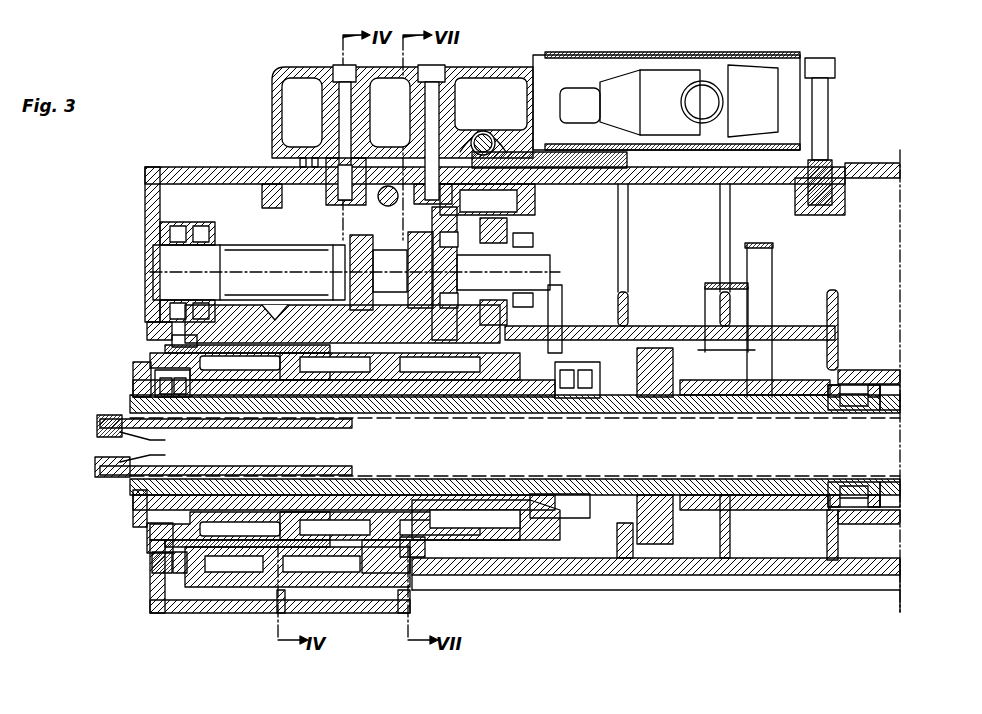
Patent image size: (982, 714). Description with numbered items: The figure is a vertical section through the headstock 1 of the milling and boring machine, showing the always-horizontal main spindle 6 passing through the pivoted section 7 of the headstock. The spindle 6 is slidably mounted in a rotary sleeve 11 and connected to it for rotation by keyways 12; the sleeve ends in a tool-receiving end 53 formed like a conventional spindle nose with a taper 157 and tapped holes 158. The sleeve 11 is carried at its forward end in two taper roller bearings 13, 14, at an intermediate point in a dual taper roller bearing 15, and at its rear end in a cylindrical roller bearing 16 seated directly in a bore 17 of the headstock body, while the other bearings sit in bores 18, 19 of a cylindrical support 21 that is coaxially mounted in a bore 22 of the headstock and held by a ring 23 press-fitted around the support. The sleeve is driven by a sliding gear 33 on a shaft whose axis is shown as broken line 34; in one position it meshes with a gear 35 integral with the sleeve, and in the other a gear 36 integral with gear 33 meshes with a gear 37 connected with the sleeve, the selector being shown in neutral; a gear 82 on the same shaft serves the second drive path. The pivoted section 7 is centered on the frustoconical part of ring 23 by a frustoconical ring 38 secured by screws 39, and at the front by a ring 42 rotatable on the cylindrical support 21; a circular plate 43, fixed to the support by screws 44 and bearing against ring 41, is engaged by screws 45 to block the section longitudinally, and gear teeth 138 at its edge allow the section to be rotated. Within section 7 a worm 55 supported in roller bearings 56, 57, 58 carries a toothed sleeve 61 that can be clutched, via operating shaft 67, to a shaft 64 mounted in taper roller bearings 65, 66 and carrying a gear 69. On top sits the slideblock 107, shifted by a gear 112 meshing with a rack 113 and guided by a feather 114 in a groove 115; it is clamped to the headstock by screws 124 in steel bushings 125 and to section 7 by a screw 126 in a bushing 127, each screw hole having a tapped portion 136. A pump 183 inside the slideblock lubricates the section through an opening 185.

The headstock 1 is at (890, 165).
The main or primary spindle 6 is at (125, 418).
The pivoted or rotatable section 7 is at (145, 174).
The rotary sleeve 11 is at (133, 392).
The keyways 12 is at (133, 500).
The taper roller bearing 13 is at (155, 372).
The taper roller bearing 14 is at (262, 370).
The dual taper roller bearing 15 is at (555, 375).
The cylindrical roller bearing 16 is at (850, 385).
The bore 17 is at (900, 392).
The bore 18 is at (400, 366).
The bore 19 is at (555, 392).
The cylindrical support 21 is at (416, 560).
The bore 22 is at (530, 575).
The ring 23 is at (386, 600).
The gear 33 is at (773, 266).
The shaft axis 34 is at (640, 326).
The gear 35 is at (790, 512).
The gear 36 is at (712, 284).
The gear 37 is at (660, 575).
The frustoconical ring 38 is at (328, 587).
The screws 39 is at (345, 580).
The ring 41 is at (205, 330).
The ring 42 is at (178, 575).
The circular plate 43 is at (147, 538).
The screws 44 is at (147, 338).
The screws 45 is at (152, 562).
The end of rotary sleeve 53 is at (135, 505).
The worm 55 is at (258, 250).
The roller bearing 56 is at (178, 228).
The roller bearing 57 is at (205, 228).
The roller bearing 58 is at (350, 240).
The sleeve 61 is at (436, 285).
The shaft 64 is at (550, 262).
The taper roller bearing 65 is at (452, 250).
The taper roller bearing 66 is at (530, 240).
The operating shaft 67 is at (390, 184).
The gear 69 is at (500, 225).
The gear 82 is at (562, 290).
The slideblock 107 is at (272, 78).
The gear 112 is at (520, 203).
The rack 113 is at (535, 168).
The longitudinal feather 114 is at (760, 184).
The groove 115 is at (640, 184).
The screws 124 is at (440, 66).
The steel bushings 125 is at (458, 150).
The screw 126 is at (340, 65).
The bushing 127 is at (355, 175).
The tapped hole portion 136 is at (340, 124).
The gear teeth 138 is at (147, 300).
The taper 157 is at (98, 458).
The tapped holes 158 is at (97, 425).
The pump 183 is at (738, 62).
The opening 185 is at (300, 160).